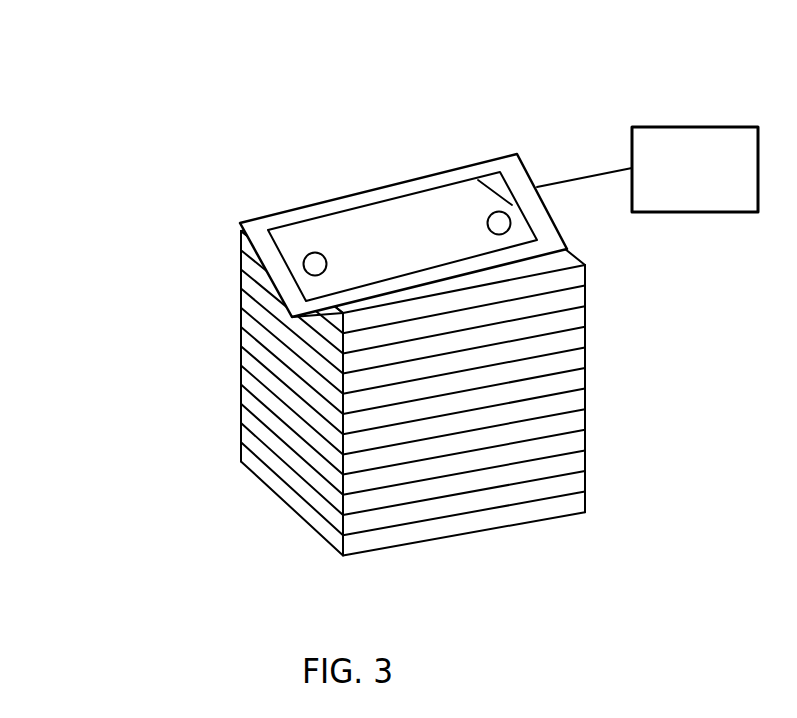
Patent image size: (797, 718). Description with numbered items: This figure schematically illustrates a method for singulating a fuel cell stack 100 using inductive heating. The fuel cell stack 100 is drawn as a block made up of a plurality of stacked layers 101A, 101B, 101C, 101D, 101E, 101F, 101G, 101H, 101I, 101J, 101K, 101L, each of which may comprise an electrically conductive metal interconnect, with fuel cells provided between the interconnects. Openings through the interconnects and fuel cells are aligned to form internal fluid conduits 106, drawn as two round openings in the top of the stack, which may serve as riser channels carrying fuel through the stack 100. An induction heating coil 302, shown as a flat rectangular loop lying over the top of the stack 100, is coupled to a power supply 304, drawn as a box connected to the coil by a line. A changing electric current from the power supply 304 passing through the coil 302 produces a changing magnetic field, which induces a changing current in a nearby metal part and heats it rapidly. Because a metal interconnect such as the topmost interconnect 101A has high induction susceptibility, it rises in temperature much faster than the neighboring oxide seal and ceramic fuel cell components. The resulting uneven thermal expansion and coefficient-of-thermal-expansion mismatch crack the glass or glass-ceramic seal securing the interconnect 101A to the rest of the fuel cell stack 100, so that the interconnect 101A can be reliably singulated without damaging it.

The fuel cell stack 100 is at (304, 369).
The interconnect 101A is at (241, 242).
The interconnect 101B is at (241, 262).
The interconnect 101C is at (241, 283).
The interconnect 101D is at (241, 306).
The interconnect 101E is at (241, 325).
The interconnect 101F is at (241, 342).
The interconnect 101G is at (241, 360).
The interconnect 101H is at (241, 376).
The interconnect 101I is at (241, 397).
The interconnect 101J is at (241, 418).
The interconnect 101K is at (241, 439).
The interconnect 101L is at (369, 502).
The internal fluid conduit 106 is at (315, 264).
The induction heating coil 302 is at (491, 160).
The power supply 304 is at (663, 127).